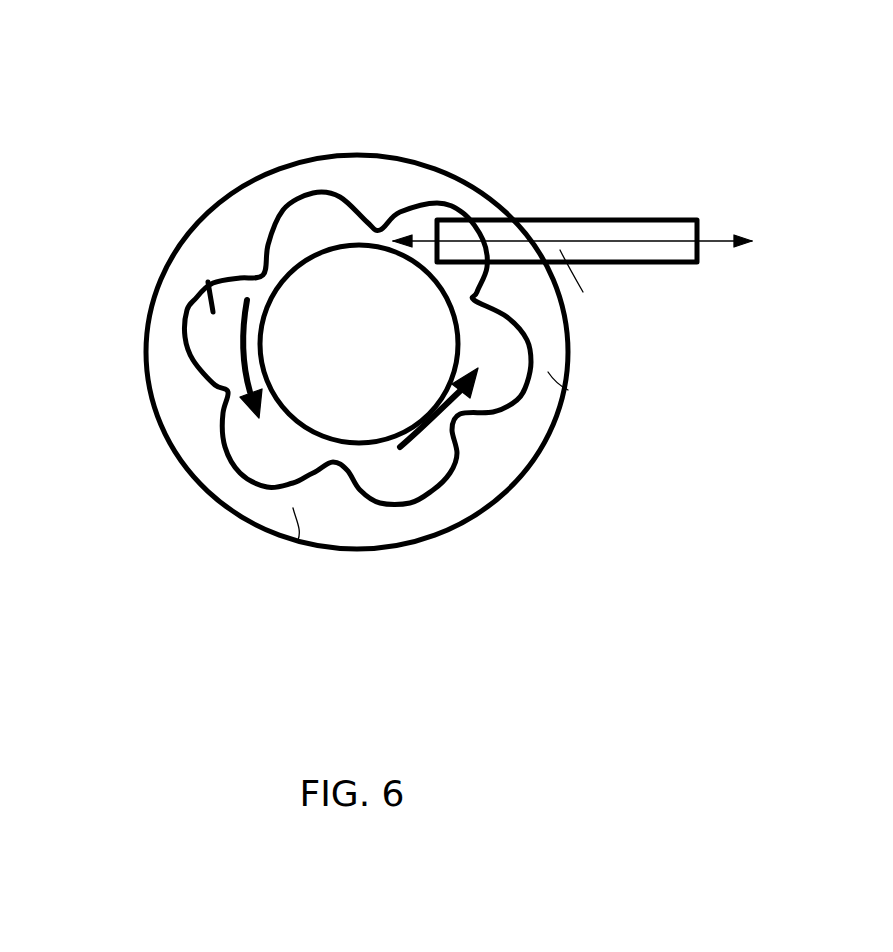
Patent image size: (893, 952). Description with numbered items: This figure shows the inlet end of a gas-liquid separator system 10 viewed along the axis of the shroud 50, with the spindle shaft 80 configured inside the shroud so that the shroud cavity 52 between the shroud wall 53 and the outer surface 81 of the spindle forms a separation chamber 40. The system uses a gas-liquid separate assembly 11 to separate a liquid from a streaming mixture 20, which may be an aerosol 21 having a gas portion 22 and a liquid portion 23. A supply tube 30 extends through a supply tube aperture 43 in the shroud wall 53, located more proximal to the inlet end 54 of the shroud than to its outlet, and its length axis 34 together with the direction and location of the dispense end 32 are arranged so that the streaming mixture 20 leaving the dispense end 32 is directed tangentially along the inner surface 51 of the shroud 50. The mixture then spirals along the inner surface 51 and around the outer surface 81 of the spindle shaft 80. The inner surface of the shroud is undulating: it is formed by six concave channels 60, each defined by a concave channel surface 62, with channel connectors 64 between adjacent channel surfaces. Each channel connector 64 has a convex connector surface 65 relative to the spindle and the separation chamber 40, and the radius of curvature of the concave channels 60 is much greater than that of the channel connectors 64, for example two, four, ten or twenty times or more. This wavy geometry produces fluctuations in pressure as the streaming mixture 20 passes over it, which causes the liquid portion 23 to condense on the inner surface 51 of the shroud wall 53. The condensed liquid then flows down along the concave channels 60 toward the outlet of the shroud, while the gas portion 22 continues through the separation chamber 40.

The gas-liquid separator system 10 is at (220, 82).
The gas-liquid separate assembly 11 is at (298, 540).
The streaming mixture 20 is at (237, 357).
The aerosol 21 is at (237, 337).
The gas portion 22 is at (237, 380).
The liquid portion 23 is at (238, 396).
The supply tube 30 is at (593, 255).
The dispense end 32 is at (423, 215).
The length axis 34 is at (713, 243).
The separation chamber 40 is at (386, 198).
The supply tube aperture 43 is at (450, 235).
The shroud 50 is at (533, 415).
The inner surface 51 is at (314, 203).
The shroud cavity 52 is at (540, 322).
The shroud wall 53 is at (548, 372).
The inlet end 54 is at (363, 153).
The concave channels 60 is at (200, 285).
The concave channel surface 62 is at (190, 317).
The channel connectors 64 is at (267, 250).
The convex connector surface 65 is at (258, 275).
The spindle shaft 80 is at (365, 428).
The outer surface 81 is at (355, 503).